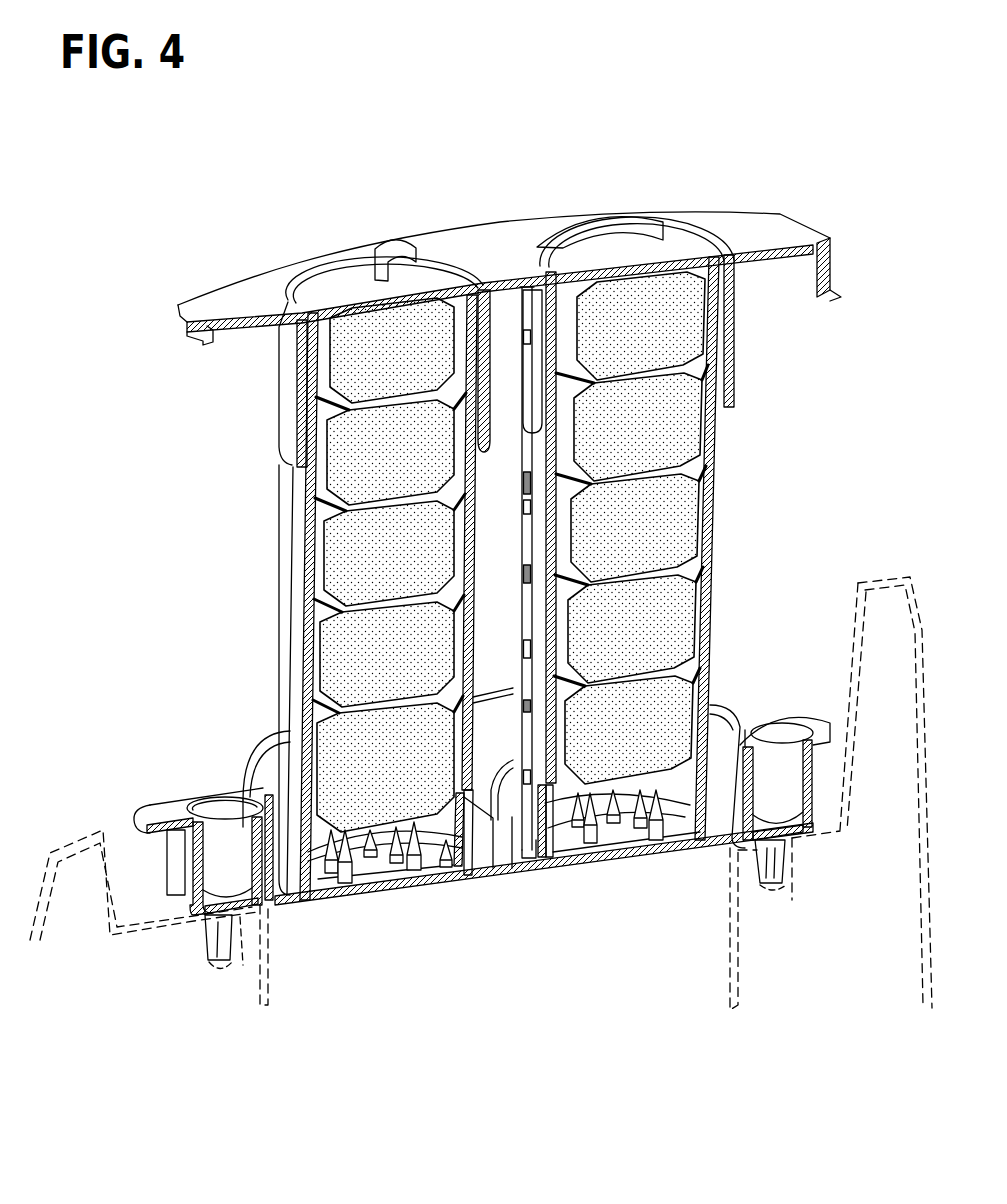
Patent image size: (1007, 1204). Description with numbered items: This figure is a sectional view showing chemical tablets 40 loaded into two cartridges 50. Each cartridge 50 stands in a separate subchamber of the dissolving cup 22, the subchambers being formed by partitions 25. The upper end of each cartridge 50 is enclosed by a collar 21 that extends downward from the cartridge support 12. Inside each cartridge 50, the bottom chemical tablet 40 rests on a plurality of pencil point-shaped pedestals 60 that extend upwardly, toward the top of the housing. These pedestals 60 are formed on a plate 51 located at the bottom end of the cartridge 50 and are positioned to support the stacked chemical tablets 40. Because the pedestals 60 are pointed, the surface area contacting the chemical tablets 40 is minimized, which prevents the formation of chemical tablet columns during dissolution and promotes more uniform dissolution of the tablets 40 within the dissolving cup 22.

The cartridge support 12 is at (727, 226).
The collar 21 is at (740, 343).
The dissolving cup 22 is at (728, 705).
The partitions 25 is at (488, 782).
The chemical tablets 40 is at (668, 510).
The cartridges 50 is at (286, 597).
The plate 51 is at (624, 833).
The pedestals 60 is at (592, 840).